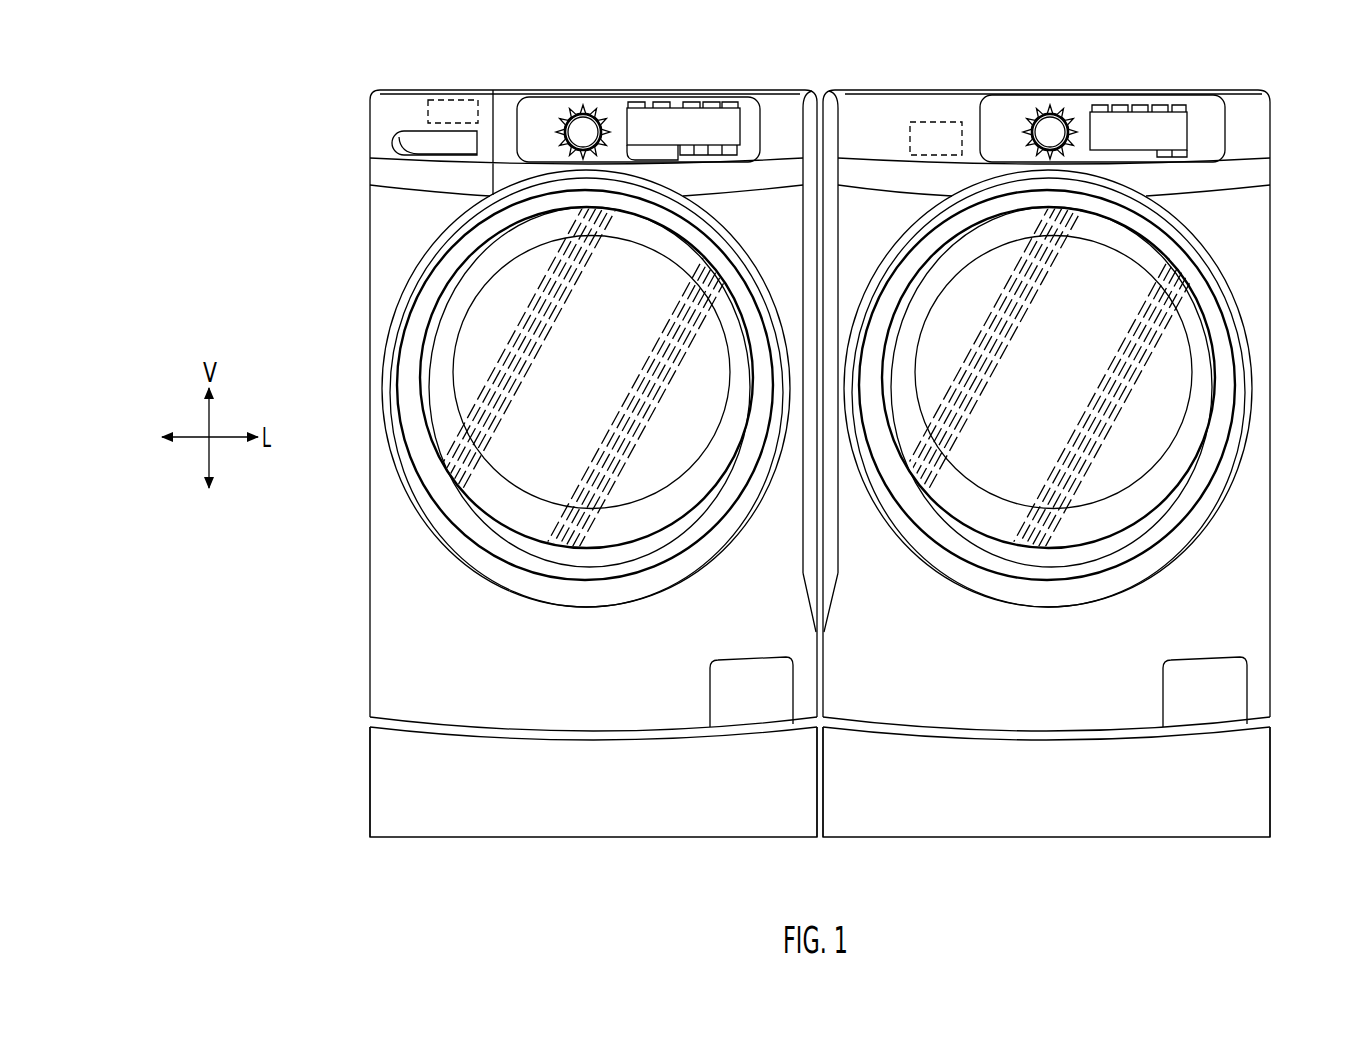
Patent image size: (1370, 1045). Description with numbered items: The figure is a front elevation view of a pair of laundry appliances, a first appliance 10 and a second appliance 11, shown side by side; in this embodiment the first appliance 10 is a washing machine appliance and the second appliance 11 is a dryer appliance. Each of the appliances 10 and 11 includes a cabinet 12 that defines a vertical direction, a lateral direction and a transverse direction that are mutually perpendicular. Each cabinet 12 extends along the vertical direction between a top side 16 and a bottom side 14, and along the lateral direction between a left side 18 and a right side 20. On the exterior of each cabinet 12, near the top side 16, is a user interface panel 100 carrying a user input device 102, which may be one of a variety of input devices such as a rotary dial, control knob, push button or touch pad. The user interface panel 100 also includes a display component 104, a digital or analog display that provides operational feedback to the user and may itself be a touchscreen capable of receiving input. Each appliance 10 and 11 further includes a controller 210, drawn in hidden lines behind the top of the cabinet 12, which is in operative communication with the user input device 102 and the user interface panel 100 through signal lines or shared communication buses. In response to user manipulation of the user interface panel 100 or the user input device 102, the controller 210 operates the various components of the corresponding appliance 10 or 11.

The first appliance 10 is at (346, 78).
The second appliance 11 is at (1299, 128).
The cabinet 12 is at (390, 622).
The bottom side 14 is at (449, 841).
The top side 16 is at (421, 77).
The left side 18 is at (367, 772).
The right side 20 is at (810, 847).
The user interface panel 100 is at (618, 108).
The user input device 102 is at (582, 126).
The display component 104 is at (707, 122).
The controller 210 is at (458, 98).